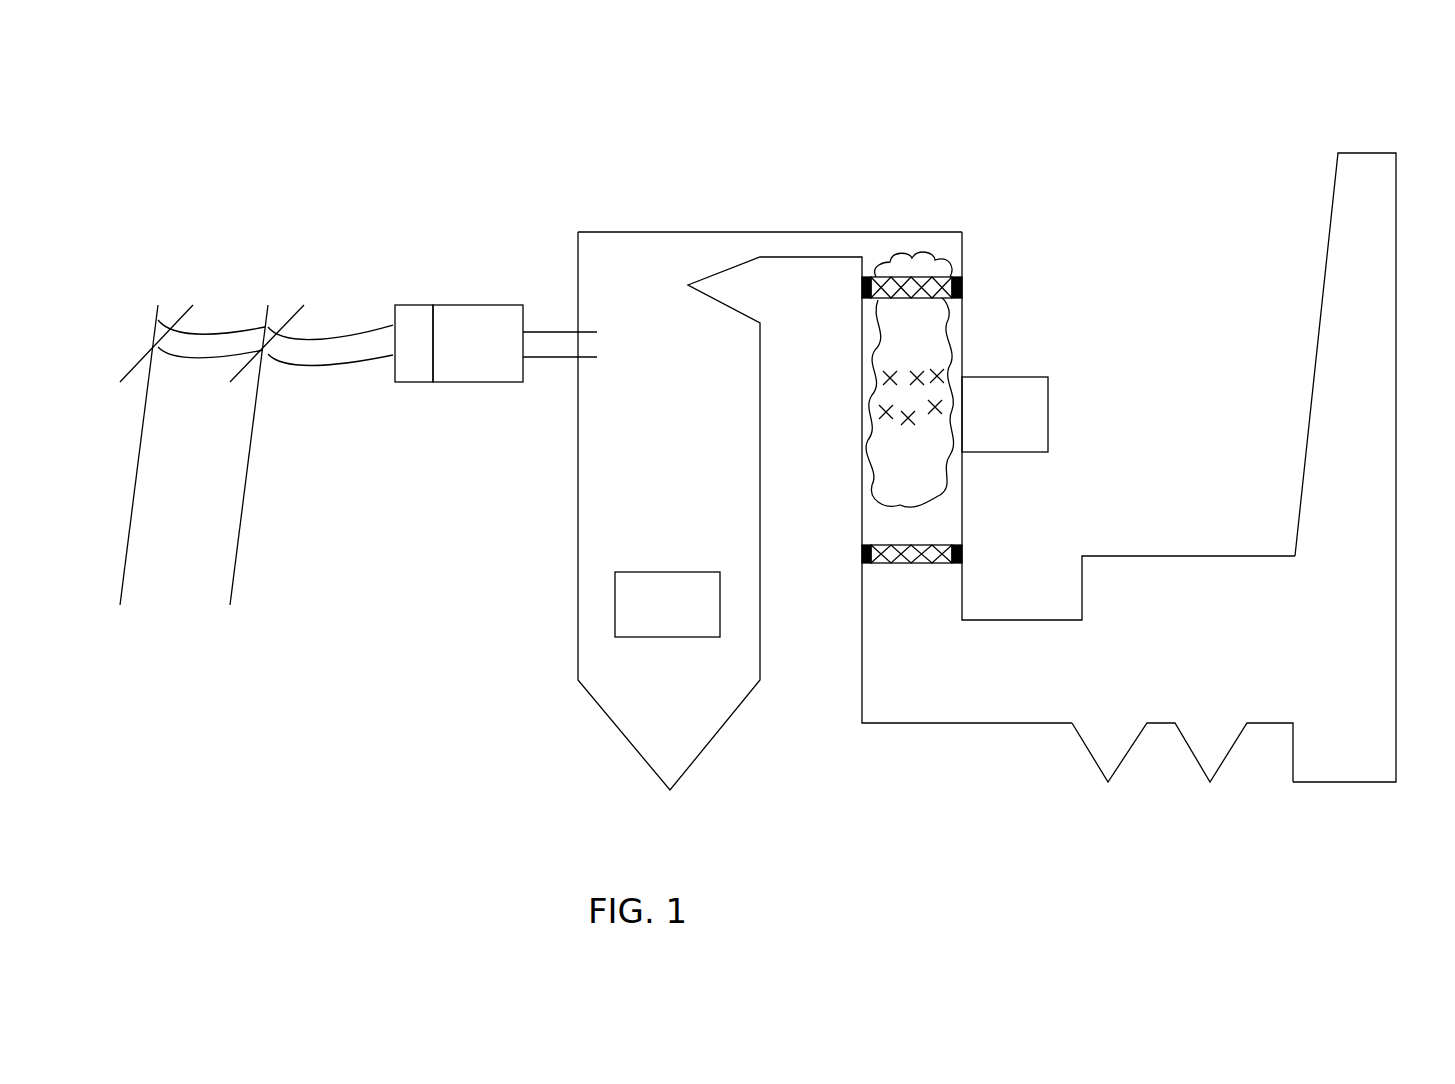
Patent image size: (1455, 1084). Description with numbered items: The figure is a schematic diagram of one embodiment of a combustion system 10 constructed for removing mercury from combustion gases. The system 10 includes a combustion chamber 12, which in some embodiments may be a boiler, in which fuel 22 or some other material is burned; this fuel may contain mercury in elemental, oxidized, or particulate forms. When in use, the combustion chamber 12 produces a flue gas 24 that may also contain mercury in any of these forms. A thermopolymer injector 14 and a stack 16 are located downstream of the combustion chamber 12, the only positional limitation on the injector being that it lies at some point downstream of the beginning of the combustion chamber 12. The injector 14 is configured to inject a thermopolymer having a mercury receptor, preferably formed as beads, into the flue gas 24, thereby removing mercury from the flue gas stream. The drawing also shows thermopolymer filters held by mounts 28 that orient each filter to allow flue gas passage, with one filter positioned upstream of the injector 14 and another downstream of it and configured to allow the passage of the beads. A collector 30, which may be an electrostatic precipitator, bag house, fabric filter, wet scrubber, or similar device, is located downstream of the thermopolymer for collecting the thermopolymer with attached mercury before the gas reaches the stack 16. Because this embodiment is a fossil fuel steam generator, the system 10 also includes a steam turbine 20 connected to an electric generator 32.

The combustion system 10 is at (236, 126).
The combustion chamber 12 is at (647, 713).
The thermopolymer injector 14 is at (1045, 388).
The stack 16 is at (1382, 383).
The steam turbine 20 is at (482, 312).
The fuel 22 is at (625, 602).
The flue gas 24 is at (910, 258).
The mounts 28 is at (862, 287).
The collector 30 is at (1160, 568).
The electric generator 32 is at (408, 320).